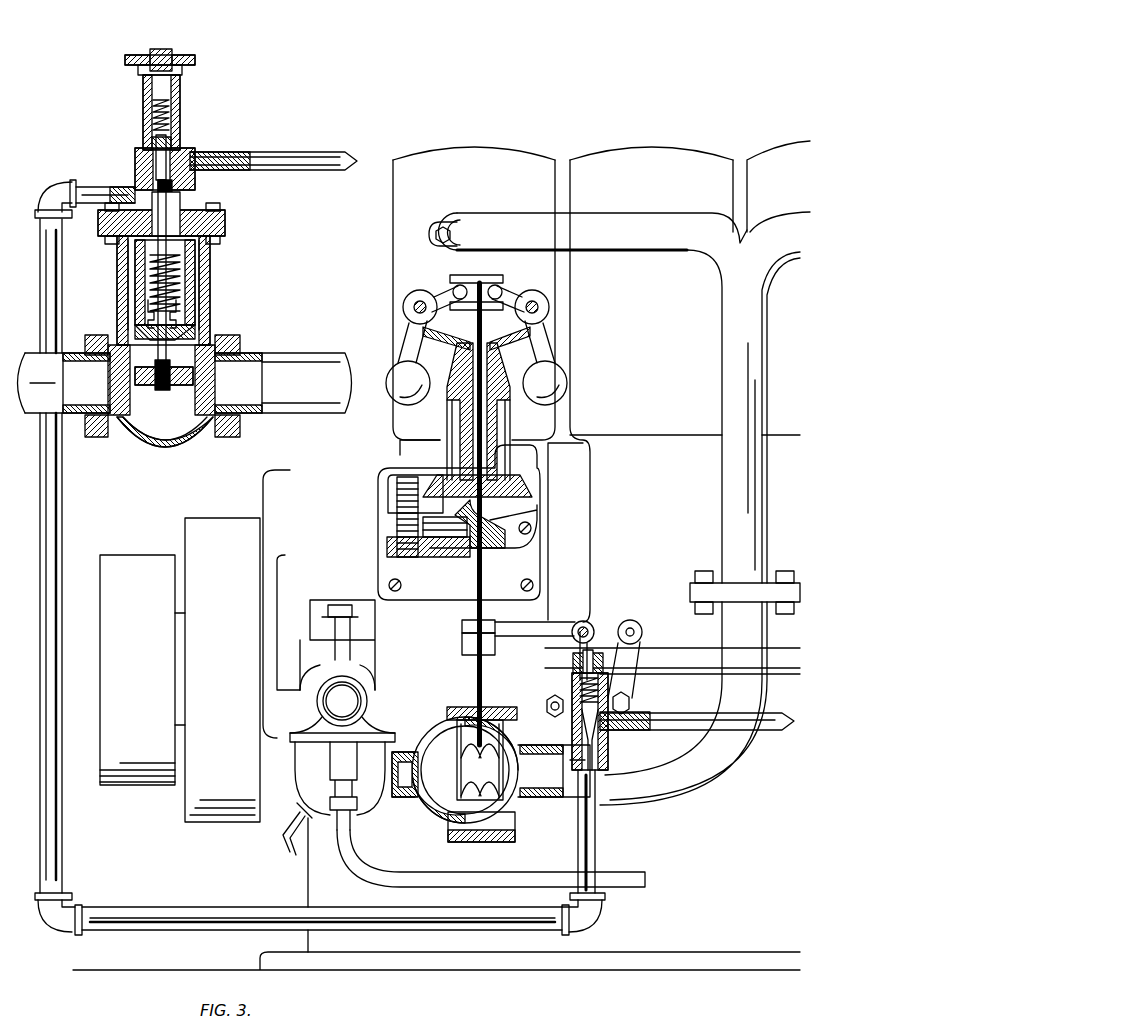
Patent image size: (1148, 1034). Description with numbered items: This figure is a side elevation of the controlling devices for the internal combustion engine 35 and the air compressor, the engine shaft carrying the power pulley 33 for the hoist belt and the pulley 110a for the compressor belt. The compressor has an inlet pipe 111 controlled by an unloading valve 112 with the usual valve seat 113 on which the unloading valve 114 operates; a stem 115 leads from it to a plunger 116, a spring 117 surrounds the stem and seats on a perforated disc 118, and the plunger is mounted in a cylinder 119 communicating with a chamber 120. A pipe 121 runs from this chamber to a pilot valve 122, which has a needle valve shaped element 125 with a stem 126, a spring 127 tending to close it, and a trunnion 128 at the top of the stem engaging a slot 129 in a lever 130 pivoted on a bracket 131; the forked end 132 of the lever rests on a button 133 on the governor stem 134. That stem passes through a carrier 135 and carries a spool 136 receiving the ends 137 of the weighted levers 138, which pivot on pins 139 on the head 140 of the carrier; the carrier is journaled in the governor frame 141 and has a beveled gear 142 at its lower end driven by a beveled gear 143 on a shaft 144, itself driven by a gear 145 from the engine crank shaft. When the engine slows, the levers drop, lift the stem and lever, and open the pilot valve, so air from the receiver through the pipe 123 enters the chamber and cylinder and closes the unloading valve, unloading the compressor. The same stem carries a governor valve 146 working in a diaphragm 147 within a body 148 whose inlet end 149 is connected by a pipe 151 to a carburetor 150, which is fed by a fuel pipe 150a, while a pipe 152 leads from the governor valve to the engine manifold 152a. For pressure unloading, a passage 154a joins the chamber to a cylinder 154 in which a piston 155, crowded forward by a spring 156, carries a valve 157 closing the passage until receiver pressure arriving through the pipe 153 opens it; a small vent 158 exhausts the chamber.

The power pulley 33 is at (185, 810).
The internal combustion engine 35 is at (607, 150).
The pulley 110a is at (110, 787).
The inlet pipe 111 is at (280, 415).
The unloading valve 112 is at (185, 446).
The valve seat 113 is at (185, 383).
The unloading valve 114 is at (140, 370).
The stem 115 is at (146, 314).
The plunger 116 is at (133, 288).
The spring 117 is at (180, 301).
The perforated disc 118 is at (192, 320).
The cylinder 119 is at (200, 271).
The chamber 120 is at (205, 245).
The pipe 121 is at (64, 273).
The pilot valve 122 is at (594, 772).
The pipe 123 is at (752, 722).
The needle valve shaped element 125 is at (608, 708).
The stem 126 is at (605, 686).
The spring 127 is at (560, 700).
The trunnion 128 is at (586, 627).
The slot 129 is at (582, 620).
The lever 130 is at (616, 608).
The bracket 131 is at (635, 650).
The forked end 132 is at (462, 623).
The button 133 is at (460, 642).
The governor stem 134 is at (490, 520).
The carrier 135 is at (505, 450).
The spool 136 is at (452, 279).
The ends 137 is at (505, 292).
The weighted levers 138 is at (548, 341).
The pins 139 is at (550, 309).
The head 140 is at (550, 294).
The governor frame 141 is at (446, 422).
The beveled gear 142 is at (440, 482).
The beveled gear 143 is at (396, 497).
The shaft 144 is at (390, 527).
The gear 145 is at (395, 550).
The governor valve 146 is at (437, 808).
The diaphragm 147 is at (482, 800).
The body 148 is at (520, 814).
The inlet end 149 is at (428, 798).
The carburetor 150 is at (292, 798).
The pipe 150a is at (350, 869).
The pipe 151 is at (402, 752).
The pipe 152 is at (680, 780).
The manifold 152a is at (618, 213).
The pipe 153 is at (305, 153).
The cylinder 154 is at (157, 163).
The passage 154a is at (150, 181).
The piston 155 is at (150, 143).
The spring 156 is at (150, 126).
The valve 157 is at (185, 177).
The vent 158 is at (185, 211).